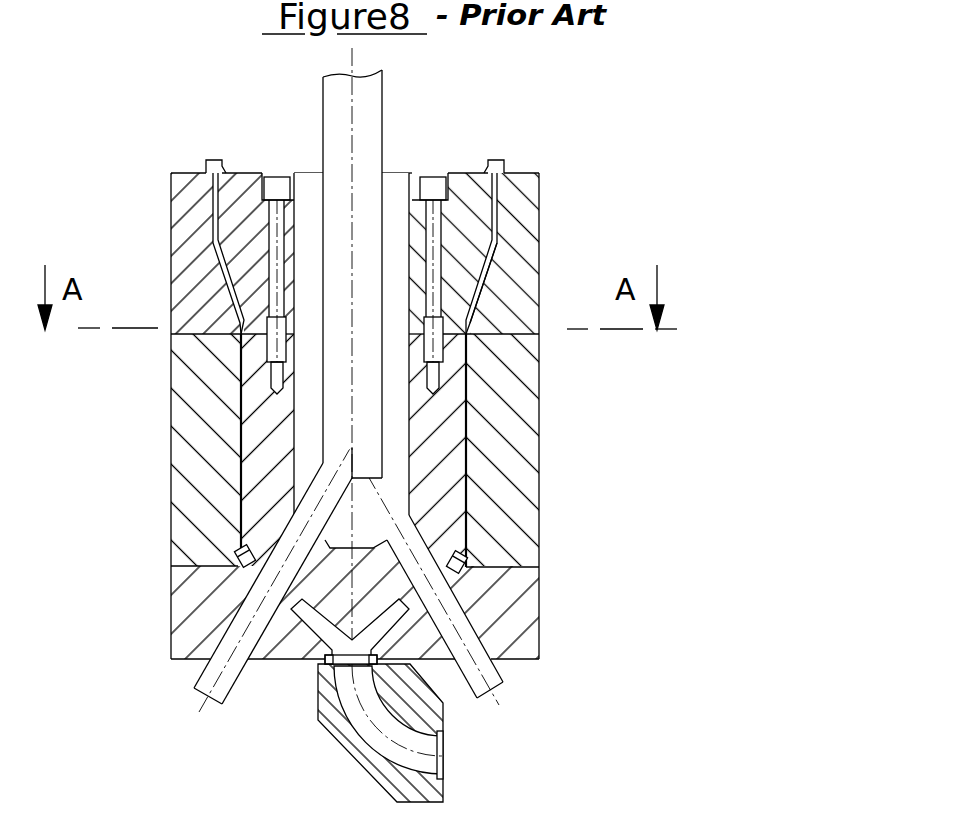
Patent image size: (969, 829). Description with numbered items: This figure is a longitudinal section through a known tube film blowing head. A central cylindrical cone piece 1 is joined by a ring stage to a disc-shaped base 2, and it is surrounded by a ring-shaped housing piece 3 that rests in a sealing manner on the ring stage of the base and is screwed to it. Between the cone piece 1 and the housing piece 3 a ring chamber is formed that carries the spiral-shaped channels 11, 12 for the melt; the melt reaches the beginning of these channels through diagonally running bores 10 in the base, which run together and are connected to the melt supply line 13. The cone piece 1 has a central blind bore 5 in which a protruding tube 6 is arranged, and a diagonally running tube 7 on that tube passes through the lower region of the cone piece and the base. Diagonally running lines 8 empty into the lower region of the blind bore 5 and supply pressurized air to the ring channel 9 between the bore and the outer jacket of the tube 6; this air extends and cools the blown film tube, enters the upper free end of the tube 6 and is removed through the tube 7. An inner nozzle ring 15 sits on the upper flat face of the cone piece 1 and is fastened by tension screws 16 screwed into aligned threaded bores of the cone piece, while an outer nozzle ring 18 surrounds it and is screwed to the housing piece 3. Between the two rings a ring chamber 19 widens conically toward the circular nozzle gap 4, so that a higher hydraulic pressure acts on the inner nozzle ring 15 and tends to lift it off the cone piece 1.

The central cylindrical cone piece 1 is at (455, 442).
The disc-shaped base 2 is at (528, 620).
The ring-shaped housing piece 3 is at (522, 400).
The circular nozzle gap 4 is at (211, 158).
The central blind bore 5 is at (302, 440).
The protruding tube 6 is at (375, 122).
The diagonally running tube 7 is at (238, 670).
The diagonally running bores or lines 8 is at (495, 683).
The ring channel 9 is at (404, 327).
The diagonally running bores 10 is at (318, 630).
The spiral-shaped channel 11 is at (462, 560).
The spiral-shaped channel 12 is at (240, 563).
The melt supply line 13 is at (380, 742).
The inner nozzle ring 15 is at (483, 228).
The tension screws 16 is at (279, 187).
The outer nozzle ring 18 is at (183, 205).
The ring chamber 19 is at (487, 263).